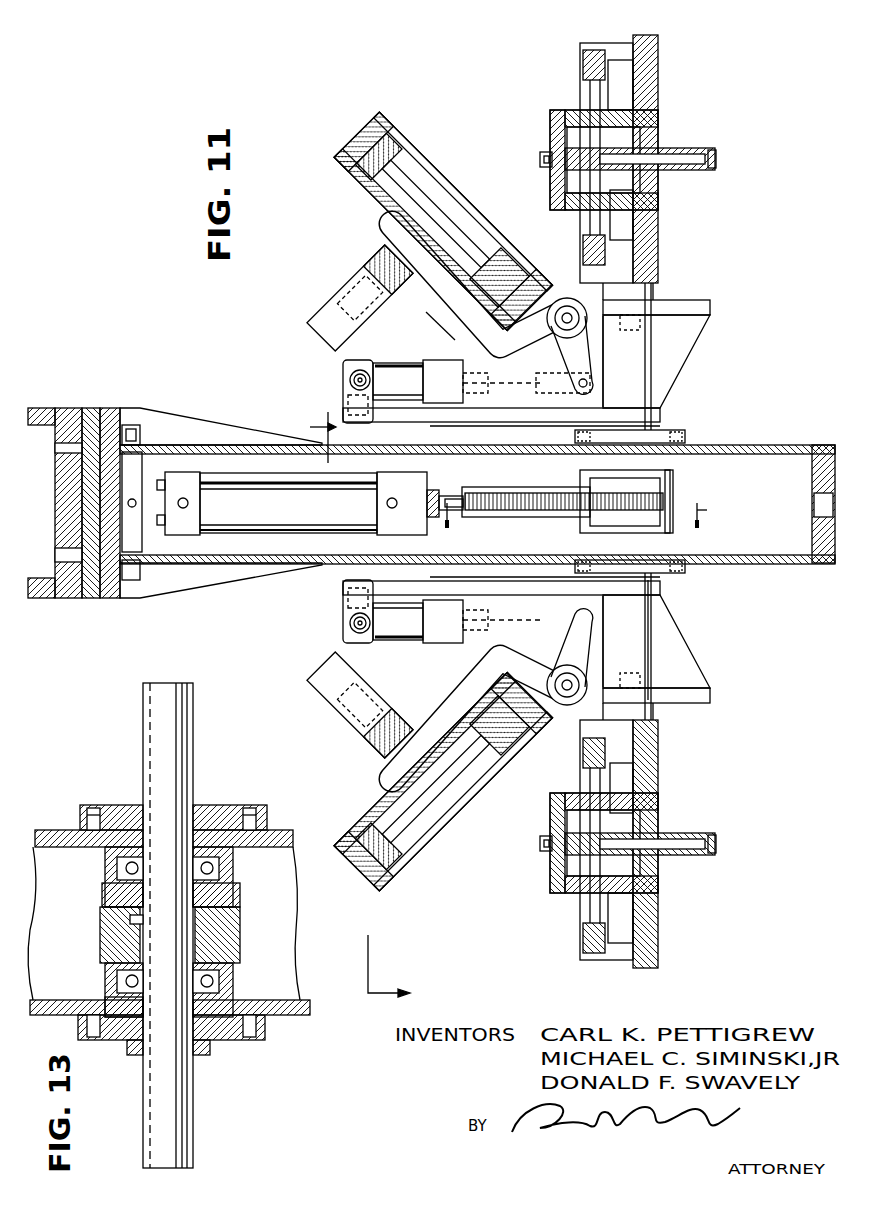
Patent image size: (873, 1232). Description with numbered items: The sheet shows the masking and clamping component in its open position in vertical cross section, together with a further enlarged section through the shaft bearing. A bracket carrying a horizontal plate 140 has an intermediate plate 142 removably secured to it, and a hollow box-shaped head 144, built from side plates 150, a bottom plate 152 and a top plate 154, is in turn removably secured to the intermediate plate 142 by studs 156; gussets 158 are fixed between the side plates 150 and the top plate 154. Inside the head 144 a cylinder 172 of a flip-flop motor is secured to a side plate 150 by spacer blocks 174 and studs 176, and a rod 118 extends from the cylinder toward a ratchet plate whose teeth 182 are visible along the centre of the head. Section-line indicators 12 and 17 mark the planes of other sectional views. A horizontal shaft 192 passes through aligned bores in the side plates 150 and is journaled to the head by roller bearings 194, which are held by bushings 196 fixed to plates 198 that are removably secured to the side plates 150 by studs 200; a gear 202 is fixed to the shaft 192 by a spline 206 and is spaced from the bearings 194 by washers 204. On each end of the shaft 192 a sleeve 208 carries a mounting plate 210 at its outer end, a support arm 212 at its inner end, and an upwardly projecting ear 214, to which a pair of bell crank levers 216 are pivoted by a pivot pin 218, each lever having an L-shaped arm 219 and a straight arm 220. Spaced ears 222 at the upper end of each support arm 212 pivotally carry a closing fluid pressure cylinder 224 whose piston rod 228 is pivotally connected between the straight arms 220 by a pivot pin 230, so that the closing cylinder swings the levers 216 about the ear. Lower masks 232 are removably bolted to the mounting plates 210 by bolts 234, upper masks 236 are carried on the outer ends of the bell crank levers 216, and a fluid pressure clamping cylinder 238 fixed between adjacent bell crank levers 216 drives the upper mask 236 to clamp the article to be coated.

In FIG. 11, the section line 12 is at (360, 695).
In FIG. 11, the section line 17 is at (578, 528).
In FIG. 11, the piston rod 118 is at (446, 496).
In FIG. 11, the horizontal plate 140 is at (66, 408).
In FIG. 11, the intermediate plate 142 is at (91, 408).
In FIG. 11, the hollow box shaped head 144 is at (716, 445).
In FIG. 13, the hollow box shaped head 144 is at (52, 830).
In FIG. 13, the side plate 150 is at (272, 835).
In FIG. 11, the bottom plate 152 is at (810, 490).
In FIG. 11, the top plate 154 is at (111, 408).
In FIG. 11, the stud 156 is at (236, 445).
In FIG. 11, the gusset 158 is at (178, 430).
In FIG. 11, the cylinder 172 is at (276, 482).
In FIG. 11, the spacer block 174 is at (198, 545).
In FIG. 11, the stud 176 is at (178, 583).
In FIG. 11, the teeth 182 is at (508, 493).
In FIG. 11, the horizontal shaft 192 is at (662, 576).
In FIG. 13, the horizontal shaft 192 is at (134, 756).
In FIG. 13, the roller bearing 194 is at (116, 848).
In FIG. 13, the bushing 196 is at (102, 990).
In FIG. 13, the plate 198 is at (104, 806).
In FIG. 13, the stud 200 is at (92, 808).
In FIG. 11, the gear 202 is at (673, 498).
In FIG. 13, the gear 202 is at (104, 903).
In FIG. 13, the washer 204 is at (102, 945).
In FIG. 13, the spline 206 is at (145, 921).
In FIG. 11, the sleeve 208 is at (664, 370).
In FIG. 11, the mounting plate 210 is at (685, 302).
In FIG. 11, the support arm 212 is at (530, 424).
In FIG. 11, the ear 214 is at (581, 304).
In FIG. 11, the bell crank lever 216 is at (416, 362).
In FIG. 11, the pivot pin 218 is at (560, 618).
In FIG. 11, the L-shaped arm 219 is at (440, 330).
In FIG. 11, the straight arm 220 is at (700, 316).
In FIG. 11, the ear 222 is at (345, 392).
In FIG. 11, the closing fluid pressure cylinder 224 is at (392, 364).
In FIG. 11, the piston rod 228 is at (520, 578).
In FIG. 11, the pivot pin 230 is at (598, 382).
In FIG. 11, the lower mask 232 is at (655, 36).
In FIG. 11, the bolt 234 is at (622, 332).
In FIG. 11, the upper mask 236 is at (357, 136).
In FIG. 11, the clamping cylinder 238 is at (336, 300).